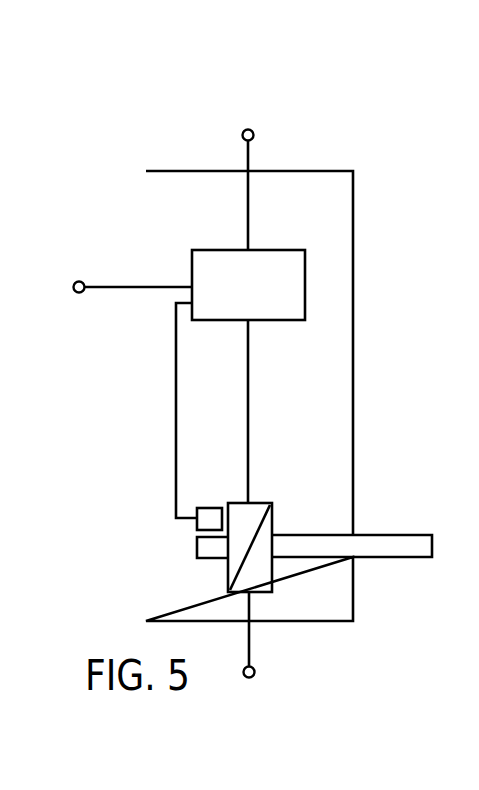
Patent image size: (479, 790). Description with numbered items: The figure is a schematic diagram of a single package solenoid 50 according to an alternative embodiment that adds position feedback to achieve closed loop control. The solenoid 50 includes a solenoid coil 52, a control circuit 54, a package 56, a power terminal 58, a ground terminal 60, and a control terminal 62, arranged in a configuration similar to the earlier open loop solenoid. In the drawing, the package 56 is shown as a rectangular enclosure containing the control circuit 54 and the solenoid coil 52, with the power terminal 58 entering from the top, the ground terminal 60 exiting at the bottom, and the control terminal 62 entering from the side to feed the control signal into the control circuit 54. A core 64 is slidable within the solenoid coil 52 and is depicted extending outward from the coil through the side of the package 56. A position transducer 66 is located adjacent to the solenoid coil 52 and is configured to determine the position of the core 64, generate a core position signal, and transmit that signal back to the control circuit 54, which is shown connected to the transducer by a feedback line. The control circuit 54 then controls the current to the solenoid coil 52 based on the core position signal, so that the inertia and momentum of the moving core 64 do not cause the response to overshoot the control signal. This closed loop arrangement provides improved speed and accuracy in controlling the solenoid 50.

The solenoid 50 is at (156, 124).
The solenoid coil 52 is at (272, 522).
The control circuit 54 is at (305, 283).
The package 56 is at (300, 171).
The power terminal 58 is at (249, 152).
The ground terminal 60 is at (251, 645).
The control terminal 62 is at (114, 285).
The core 64 is at (408, 547).
The position transducer 66 is at (207, 506).